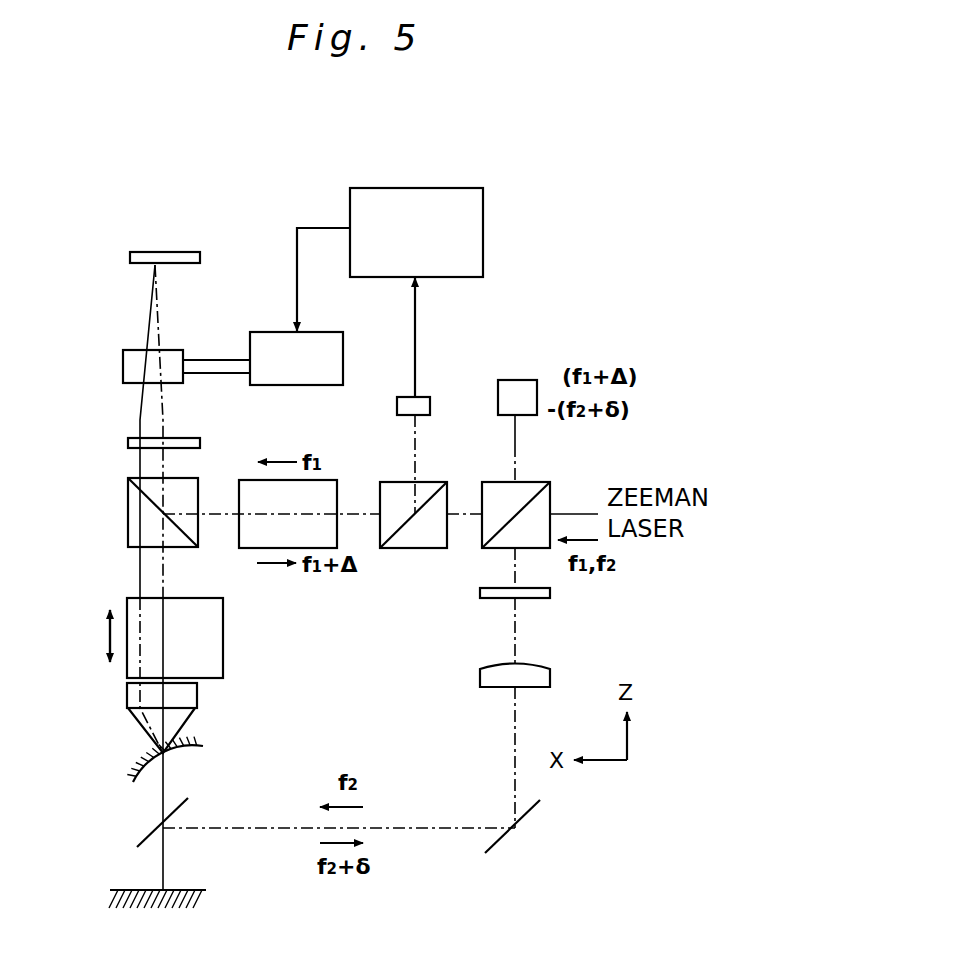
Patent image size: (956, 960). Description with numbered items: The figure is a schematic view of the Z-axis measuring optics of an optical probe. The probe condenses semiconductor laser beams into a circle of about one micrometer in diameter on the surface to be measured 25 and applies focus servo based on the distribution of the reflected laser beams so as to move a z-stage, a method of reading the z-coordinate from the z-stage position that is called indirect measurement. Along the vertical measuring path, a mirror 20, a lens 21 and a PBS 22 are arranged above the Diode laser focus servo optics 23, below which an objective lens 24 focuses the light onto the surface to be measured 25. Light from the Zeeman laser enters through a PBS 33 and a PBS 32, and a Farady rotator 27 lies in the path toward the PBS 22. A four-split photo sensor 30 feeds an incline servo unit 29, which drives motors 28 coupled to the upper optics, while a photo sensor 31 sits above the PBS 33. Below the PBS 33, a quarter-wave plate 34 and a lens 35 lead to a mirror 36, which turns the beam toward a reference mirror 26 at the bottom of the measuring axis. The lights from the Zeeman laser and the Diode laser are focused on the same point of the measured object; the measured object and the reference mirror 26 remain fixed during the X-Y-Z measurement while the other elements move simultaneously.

The mirror 20 is at (150, 250).
The lens 21 is at (123, 352).
The PBS 22 is at (128, 492).
The Diode laser focus servo optics 23 is at (235, 640).
The objective lens 24 is at (202, 697).
The surface to be measured 25 is at (192, 763).
The reference mirror 26 is at (205, 900).
The Farady rotator 27 is at (243, 478).
The motors 28 is at (273, 332).
The incline servo unit 29 is at (438, 187).
The 4-split photo sensor 30 is at (434, 394).
The photo sensor 31 is at (536, 361).
The PBS 32 is at (425, 480).
The PBS 33 is at (527, 480).
The λ/4 plate 34 is at (542, 598).
The lens 35 is at (492, 668).
The mirror 36 is at (533, 813).